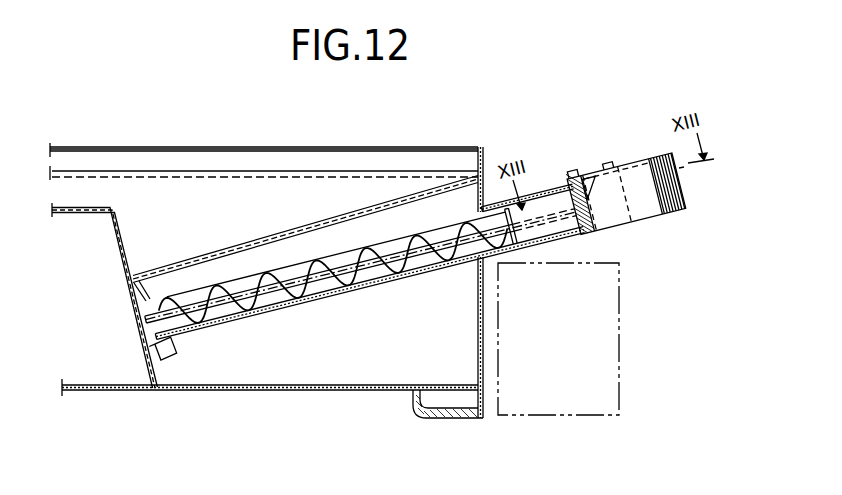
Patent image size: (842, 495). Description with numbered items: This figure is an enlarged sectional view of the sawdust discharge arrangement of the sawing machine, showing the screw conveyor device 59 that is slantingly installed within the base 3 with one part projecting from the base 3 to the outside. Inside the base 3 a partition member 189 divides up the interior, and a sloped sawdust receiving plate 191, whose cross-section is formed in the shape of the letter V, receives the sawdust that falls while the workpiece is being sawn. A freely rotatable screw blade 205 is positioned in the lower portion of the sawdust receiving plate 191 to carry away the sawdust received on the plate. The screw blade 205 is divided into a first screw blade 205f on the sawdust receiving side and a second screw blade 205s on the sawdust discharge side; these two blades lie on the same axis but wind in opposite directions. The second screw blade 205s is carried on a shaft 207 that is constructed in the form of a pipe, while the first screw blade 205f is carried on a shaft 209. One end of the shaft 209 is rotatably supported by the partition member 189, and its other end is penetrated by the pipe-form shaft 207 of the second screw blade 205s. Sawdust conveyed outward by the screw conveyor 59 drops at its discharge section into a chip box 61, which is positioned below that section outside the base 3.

The base 3 is at (265, 393).
The screw conveyor device 59 is at (617, 225).
The chip box 61 is at (621, 362).
The partition member 189 is at (120, 246).
The sawdust receiving plate 191 is at (256, 252).
The screw blade 205 is at (360, 275).
The second screw blade 205s is at (415, 263).
The first screw blade 205f is at (275, 316).
The shaft of the second screw blade 207 is at (422, 258).
The shaft of the first screw blade 209 is at (229, 326).